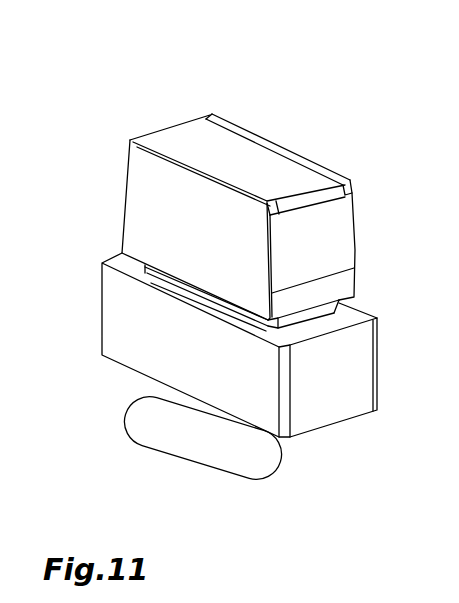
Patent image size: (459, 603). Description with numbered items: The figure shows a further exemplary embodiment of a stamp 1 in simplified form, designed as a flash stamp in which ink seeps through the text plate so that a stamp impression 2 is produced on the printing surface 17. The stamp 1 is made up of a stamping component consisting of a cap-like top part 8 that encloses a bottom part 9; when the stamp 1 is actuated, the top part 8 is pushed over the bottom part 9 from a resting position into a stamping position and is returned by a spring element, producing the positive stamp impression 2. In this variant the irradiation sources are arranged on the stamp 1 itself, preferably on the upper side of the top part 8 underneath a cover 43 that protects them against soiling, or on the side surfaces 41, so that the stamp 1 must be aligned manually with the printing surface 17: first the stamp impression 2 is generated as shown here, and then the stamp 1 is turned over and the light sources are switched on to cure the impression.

The stamp 1 is at (104, 82).
The stamp impression 2 is at (202, 437).
The top part 8 is at (163, 183).
The bottom part 9 is at (247, 373).
The printing surface 17 is at (108, 392).
The side surfaces 41 is at (162, 215).
The cover 43 is at (235, 158).